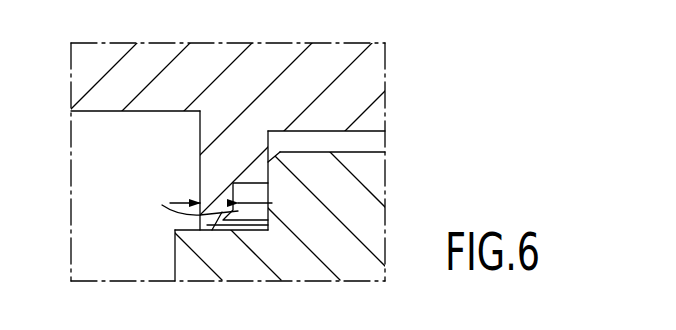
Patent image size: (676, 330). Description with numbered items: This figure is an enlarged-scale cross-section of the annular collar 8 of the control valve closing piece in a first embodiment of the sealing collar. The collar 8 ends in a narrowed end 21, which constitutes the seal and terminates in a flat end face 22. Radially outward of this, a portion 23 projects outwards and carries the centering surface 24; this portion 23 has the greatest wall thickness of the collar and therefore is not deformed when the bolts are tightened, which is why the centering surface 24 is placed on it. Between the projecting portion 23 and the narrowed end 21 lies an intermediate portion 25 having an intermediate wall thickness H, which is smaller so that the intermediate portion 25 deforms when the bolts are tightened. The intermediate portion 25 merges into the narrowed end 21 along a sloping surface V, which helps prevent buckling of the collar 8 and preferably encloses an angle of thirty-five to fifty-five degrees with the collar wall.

The annular collar 8 is at (213, 170).
The narrowed end 21 is at (214, 219).
The flat end face 22 is at (212, 230).
The projecting portion 23 is at (233, 158).
The centering surface 24 is at (266, 143).
The intermediate portion 25 is at (222, 196).
The sloping surface V is at (175, 201).
The intermediate wall thickness H is at (274, 204).